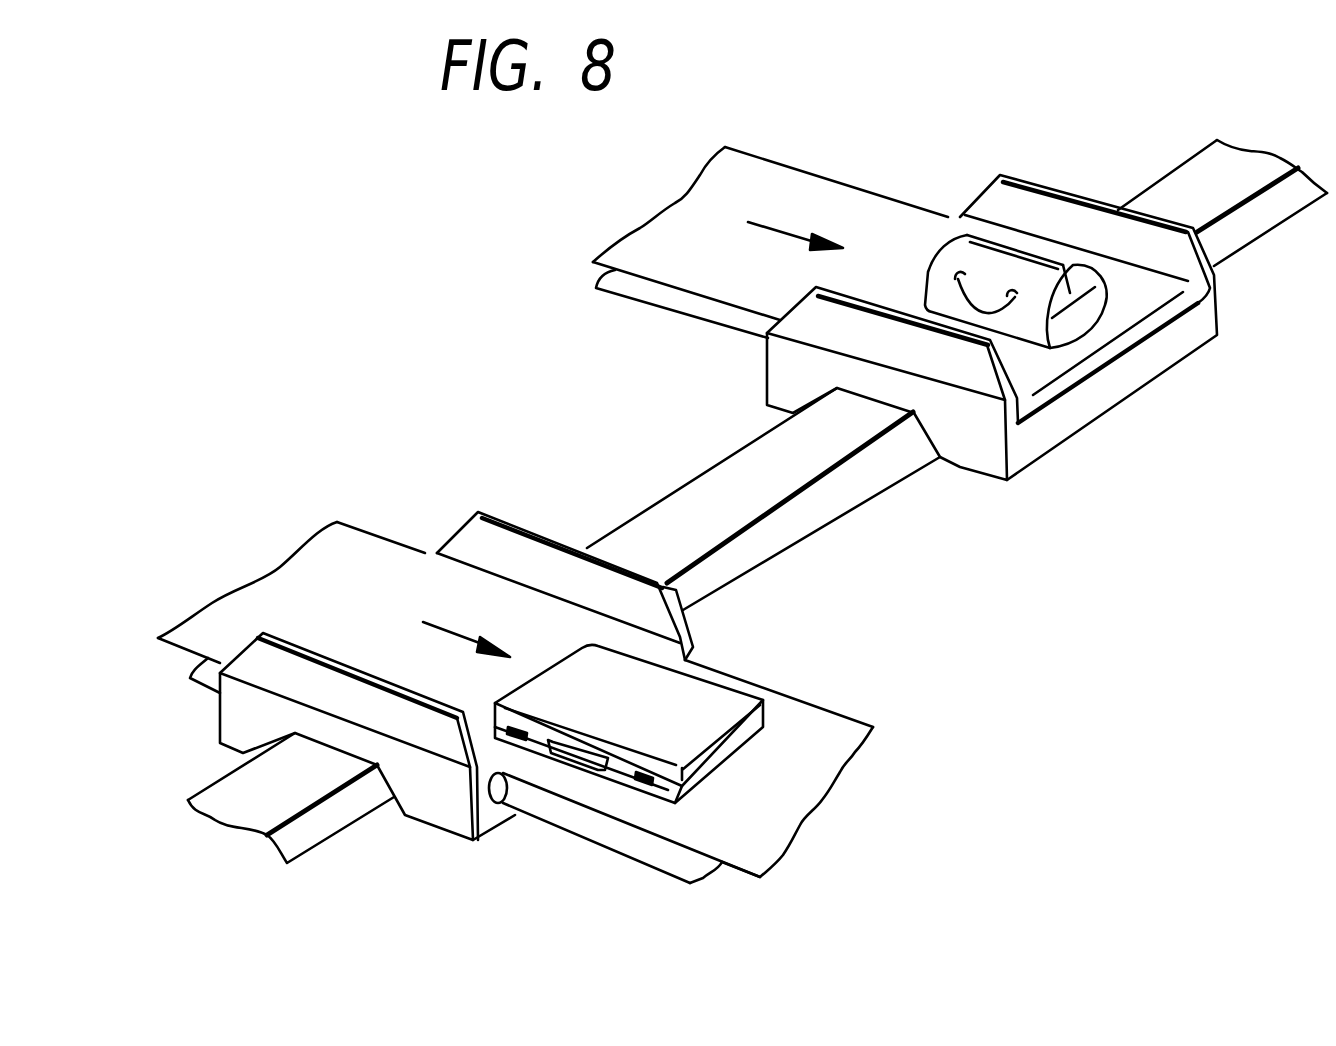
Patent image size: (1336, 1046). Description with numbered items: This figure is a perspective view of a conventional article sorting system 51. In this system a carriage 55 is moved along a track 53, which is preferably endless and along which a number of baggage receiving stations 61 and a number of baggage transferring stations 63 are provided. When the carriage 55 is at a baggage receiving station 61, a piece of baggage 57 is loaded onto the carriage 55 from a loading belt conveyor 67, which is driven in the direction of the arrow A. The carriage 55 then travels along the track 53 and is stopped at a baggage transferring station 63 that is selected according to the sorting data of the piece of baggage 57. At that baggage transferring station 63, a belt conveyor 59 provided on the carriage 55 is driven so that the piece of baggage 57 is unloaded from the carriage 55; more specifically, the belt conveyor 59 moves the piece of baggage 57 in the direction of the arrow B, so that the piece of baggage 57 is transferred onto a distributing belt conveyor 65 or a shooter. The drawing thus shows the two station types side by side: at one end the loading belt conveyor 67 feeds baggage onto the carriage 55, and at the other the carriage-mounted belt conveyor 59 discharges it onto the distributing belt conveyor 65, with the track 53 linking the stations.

The article sorting system 51 is at (468, 371).
The track 53 is at (668, 495).
The carriage 55 is at (1070, 438).
The piece of baggage 57 is at (1087, 328).
The belt conveyor 59 is at (1133, 298).
The baggage receiving station 61 is at (958, 160).
The baggage transferring station 63 is at (778, 632).
The distributing belt conveyor 65 is at (860, 716).
The loading belt conveyor 67 is at (792, 167).